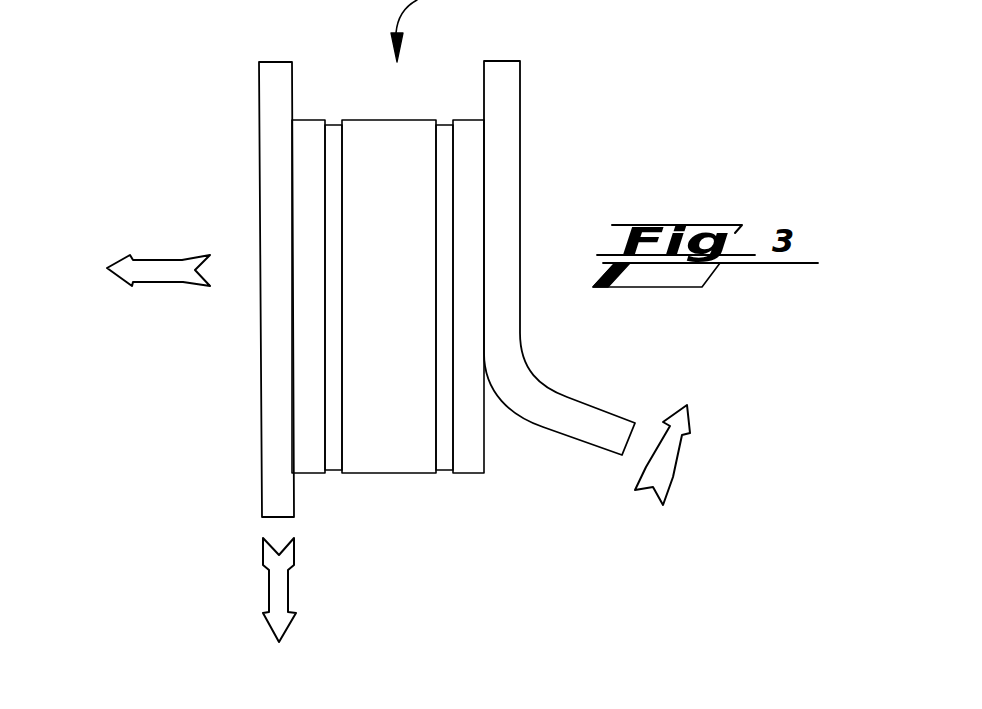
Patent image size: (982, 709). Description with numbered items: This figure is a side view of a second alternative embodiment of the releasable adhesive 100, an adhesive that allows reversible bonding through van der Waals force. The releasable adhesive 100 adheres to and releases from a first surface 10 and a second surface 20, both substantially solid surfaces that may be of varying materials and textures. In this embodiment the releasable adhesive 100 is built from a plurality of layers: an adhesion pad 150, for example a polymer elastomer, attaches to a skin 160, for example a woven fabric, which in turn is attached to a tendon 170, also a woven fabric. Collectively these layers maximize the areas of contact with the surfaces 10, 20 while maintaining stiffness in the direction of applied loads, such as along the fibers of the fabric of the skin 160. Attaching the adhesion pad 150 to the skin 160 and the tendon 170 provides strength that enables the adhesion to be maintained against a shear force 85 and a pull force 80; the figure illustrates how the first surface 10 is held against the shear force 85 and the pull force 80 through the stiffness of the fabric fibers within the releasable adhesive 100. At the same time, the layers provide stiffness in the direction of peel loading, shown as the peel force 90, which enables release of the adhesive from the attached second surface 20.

The first surface 10 is at (260, 147).
The second surface 20 is at (520, 147).
The pull force 80 is at (162, 262).
The shear force 85 is at (268, 577).
The peel force 90 is at (678, 458).
The releasable adhesive 100 is at (478, 0).
The adhesion pad 150 is at (313, 473).
The skin 160 is at (450, 470).
The tendon 170 is at (396, 387).